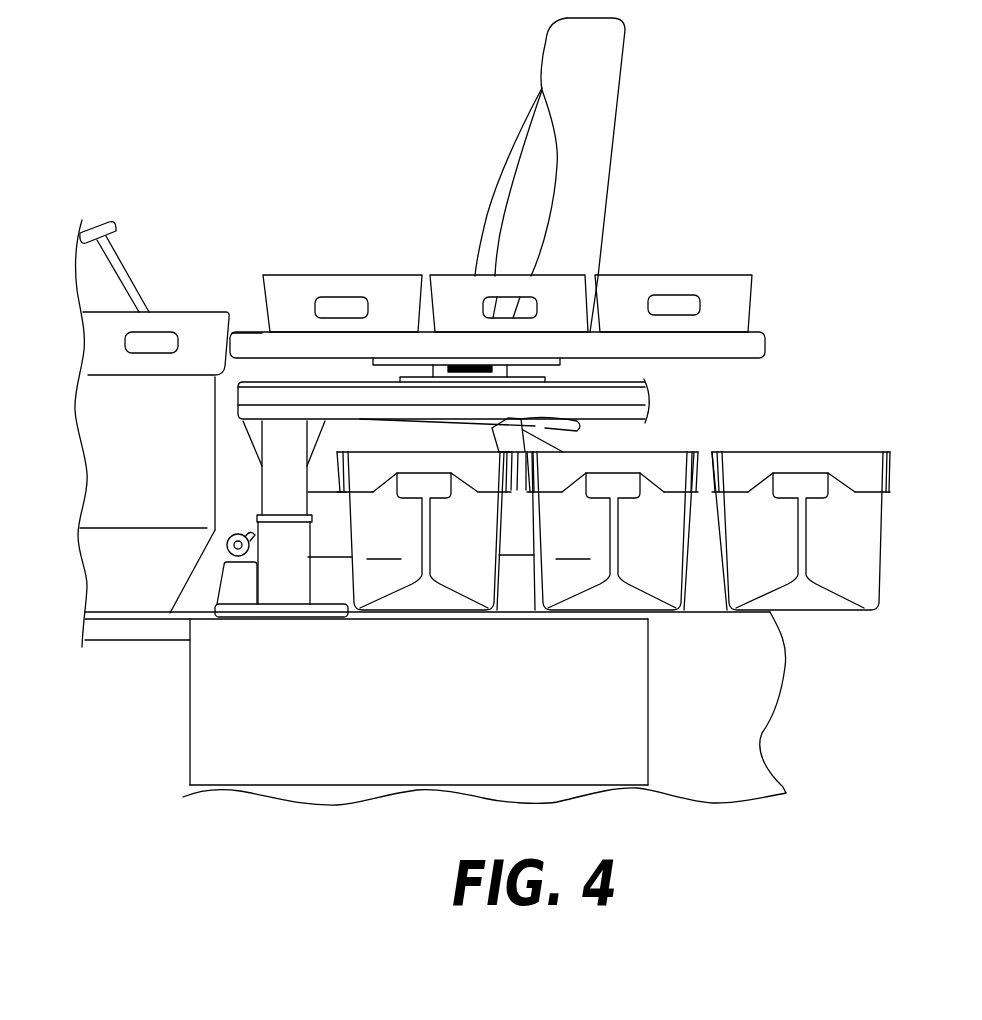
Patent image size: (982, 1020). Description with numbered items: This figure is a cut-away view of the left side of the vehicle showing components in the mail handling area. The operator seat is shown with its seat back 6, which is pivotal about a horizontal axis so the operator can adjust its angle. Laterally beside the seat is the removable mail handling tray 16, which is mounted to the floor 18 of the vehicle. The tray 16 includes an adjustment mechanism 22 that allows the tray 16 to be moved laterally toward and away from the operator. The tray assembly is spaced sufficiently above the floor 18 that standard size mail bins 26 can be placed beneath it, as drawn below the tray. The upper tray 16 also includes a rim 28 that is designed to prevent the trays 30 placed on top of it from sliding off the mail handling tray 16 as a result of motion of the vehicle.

The seat back 6 is at (600, 128).
The tray 16 is at (765, 341).
The floor 18 is at (703, 613).
The adjustment mechanism 22 is at (630, 392).
The mail bins 26 is at (873, 500).
The rim 28 is at (258, 332).
The trays 30 is at (302, 287).